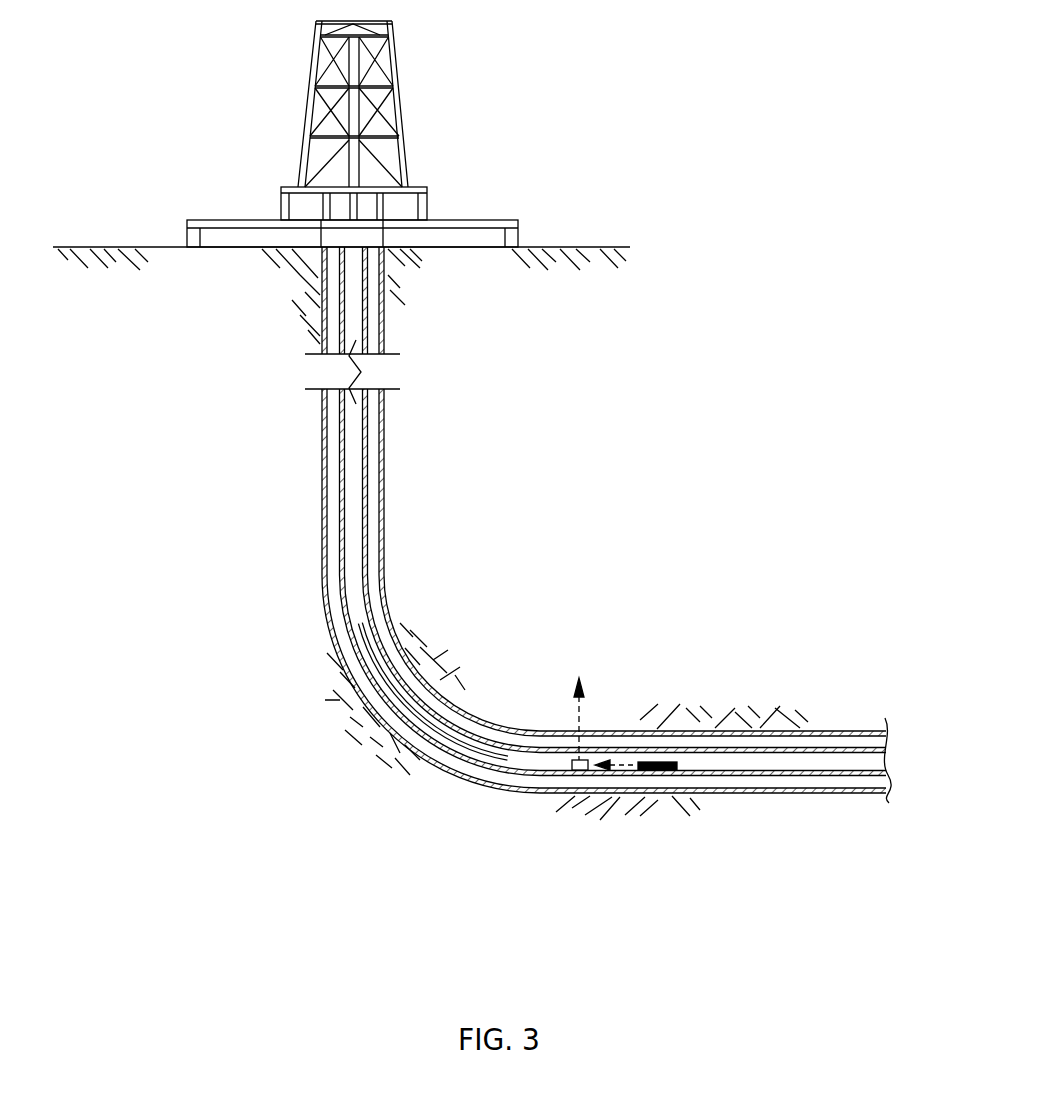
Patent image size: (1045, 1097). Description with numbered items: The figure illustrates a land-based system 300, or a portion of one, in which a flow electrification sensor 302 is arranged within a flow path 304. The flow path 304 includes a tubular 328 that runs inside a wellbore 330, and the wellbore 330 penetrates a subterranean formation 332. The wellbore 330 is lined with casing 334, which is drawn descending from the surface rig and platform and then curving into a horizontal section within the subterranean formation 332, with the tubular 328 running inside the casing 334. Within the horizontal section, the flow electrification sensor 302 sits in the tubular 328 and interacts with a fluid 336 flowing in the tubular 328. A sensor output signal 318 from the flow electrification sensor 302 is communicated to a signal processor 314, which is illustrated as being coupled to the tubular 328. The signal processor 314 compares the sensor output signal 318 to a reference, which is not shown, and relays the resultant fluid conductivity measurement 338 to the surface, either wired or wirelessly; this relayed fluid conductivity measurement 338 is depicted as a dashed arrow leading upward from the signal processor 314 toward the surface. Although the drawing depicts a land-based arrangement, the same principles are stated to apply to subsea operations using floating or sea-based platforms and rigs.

The system 300 is at (788, 265).
The flow electrification sensor 302 is at (668, 771).
The flow path 304 is at (343, 531).
The signal processor 314 is at (566, 773).
The sensor output signal 318 is at (618, 770).
The tubular 328 is at (392, 511).
The wellbore 330 is at (369, 545).
The subterranean formation 332 is at (605, 645).
The casing 334 is at (386, 438).
The fluid 336 is at (827, 763).
The fluid conductivity measurement 338 is at (580, 716).